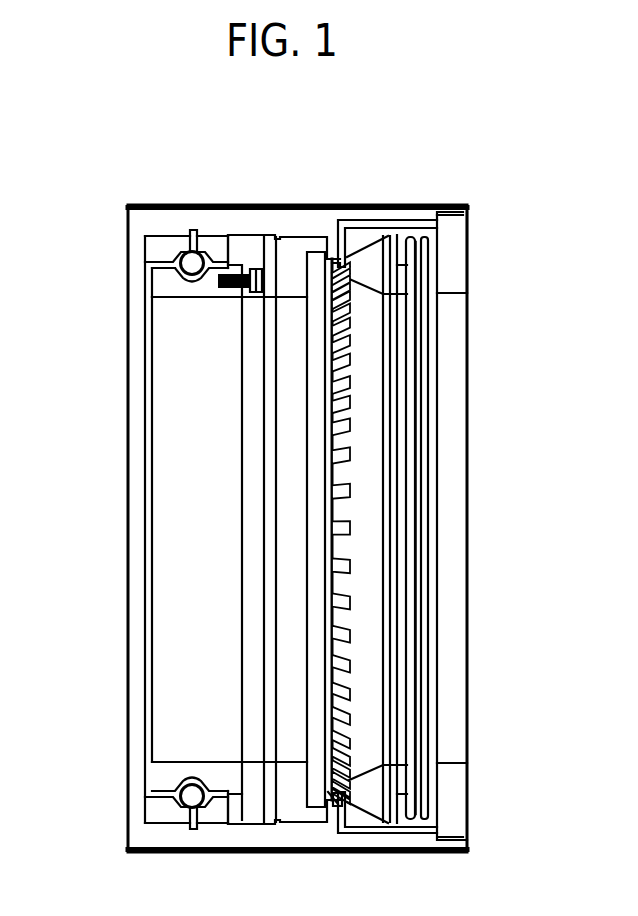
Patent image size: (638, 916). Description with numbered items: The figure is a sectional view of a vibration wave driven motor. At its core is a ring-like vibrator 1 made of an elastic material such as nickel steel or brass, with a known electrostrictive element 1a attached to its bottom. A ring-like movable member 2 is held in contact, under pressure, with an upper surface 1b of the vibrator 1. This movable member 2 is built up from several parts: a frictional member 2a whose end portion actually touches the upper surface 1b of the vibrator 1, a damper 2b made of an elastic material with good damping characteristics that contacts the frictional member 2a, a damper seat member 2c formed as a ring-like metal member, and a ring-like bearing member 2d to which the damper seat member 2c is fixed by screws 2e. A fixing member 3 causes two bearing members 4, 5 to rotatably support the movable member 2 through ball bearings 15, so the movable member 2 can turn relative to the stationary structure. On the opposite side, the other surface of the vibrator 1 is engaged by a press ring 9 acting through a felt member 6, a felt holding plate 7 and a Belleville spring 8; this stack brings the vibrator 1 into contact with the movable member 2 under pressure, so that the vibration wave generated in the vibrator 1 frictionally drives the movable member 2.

The vibrator 1 is at (375, 250).
The electrostrictive element 1a is at (410, 237).
The upper surface 1b is at (333, 801).
The movable member 2 is at (320, 156).
The frictional member 2a is at (304, 250).
The damper 2b is at (272, 242).
The damper seat member 2c is at (248, 243).
The bearing member 2d is at (158, 280).
The screws 2e is at (218, 280).
The fixing member 3 is at (217, 215).
The bearing member 4 is at (158, 240).
The bearing member 5 is at (206, 240).
The felt member 6 is at (398, 286).
The felt holding plate 7 is at (413, 228).
The Belleville spring 8 is at (437, 300).
The press ring 9 is at (455, 266).
The ball bearings 15 is at (190, 800).